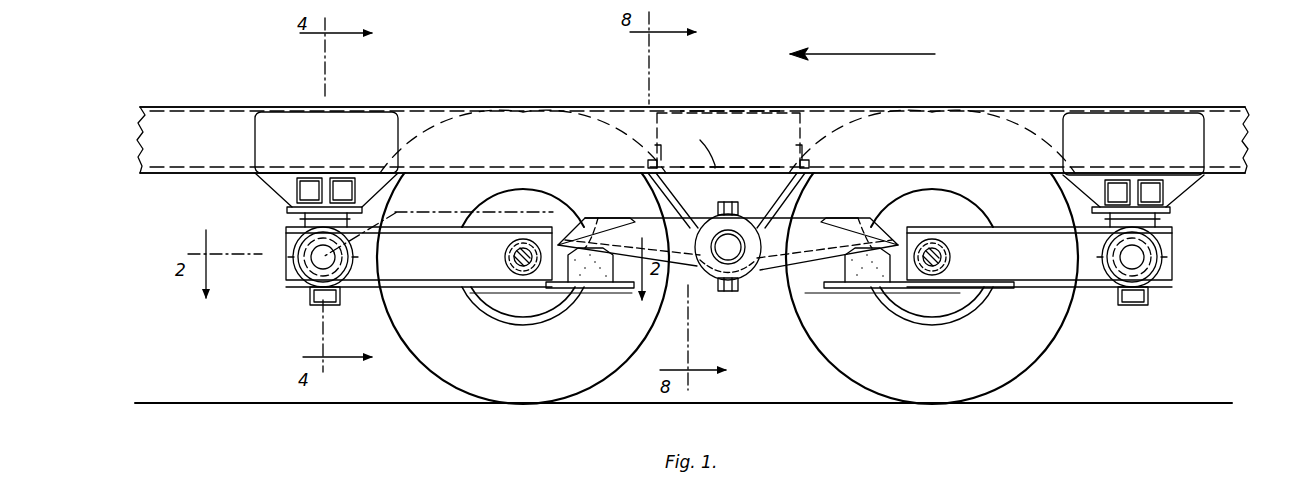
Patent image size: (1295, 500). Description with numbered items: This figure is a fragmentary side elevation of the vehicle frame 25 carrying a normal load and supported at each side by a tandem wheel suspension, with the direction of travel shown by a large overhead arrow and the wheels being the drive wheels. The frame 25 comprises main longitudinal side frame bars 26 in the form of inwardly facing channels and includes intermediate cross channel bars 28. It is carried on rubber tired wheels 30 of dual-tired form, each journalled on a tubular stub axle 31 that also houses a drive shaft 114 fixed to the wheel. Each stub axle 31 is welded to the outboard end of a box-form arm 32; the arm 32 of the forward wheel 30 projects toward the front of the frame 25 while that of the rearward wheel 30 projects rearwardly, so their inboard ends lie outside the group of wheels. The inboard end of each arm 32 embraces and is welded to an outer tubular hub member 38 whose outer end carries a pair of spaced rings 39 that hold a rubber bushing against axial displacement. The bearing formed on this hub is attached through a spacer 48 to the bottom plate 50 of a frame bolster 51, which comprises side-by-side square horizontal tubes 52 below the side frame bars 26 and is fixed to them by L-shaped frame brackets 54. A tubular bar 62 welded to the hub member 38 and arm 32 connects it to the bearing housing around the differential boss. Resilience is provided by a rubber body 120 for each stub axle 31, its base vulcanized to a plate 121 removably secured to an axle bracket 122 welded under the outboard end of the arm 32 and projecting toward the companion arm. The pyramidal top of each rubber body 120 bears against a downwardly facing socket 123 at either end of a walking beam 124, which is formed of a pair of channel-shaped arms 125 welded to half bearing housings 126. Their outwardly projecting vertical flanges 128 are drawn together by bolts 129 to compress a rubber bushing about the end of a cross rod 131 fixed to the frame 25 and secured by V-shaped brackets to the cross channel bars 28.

The vehicle frame 25 is at (1042, 103).
The main longitudinal side frame bars 26 is at (140, 124).
The intermediate cross channel bars 28 is at (728, 107).
The rubber tired wheels 30 is at (515, 380).
The tubular stub axle 31 is at (510, 257).
The arm 32 is at (404, 275).
The outer tubular hub member 38 is at (330, 268).
The spaced rings 39 is at (290, 288).
The spacer 48 is at (292, 218).
The bottom plate 50 is at (292, 207).
The frame bolster 51 is at (305, 178).
The horizontal tubes 52 is at (340, 178).
The L-shaped frame bracket 54 is at (390, 110).
The tubular bar 62 is at (328, 305).
The drive shafts 114 is at (527, 277).
The rubber body 120 is at (590, 283).
The plate 121 is at (582, 289).
The axle bracket 122 is at (520, 298).
The downwardly facing socket 123 is at (600, 218).
The walking beam 124 is at (808, 214).
The channel-shaped arms 125 is at (680, 212).
The half bearing housing 126 is at (727, 308).
The vertical flanges 128 is at (728, 202).
The bolts 129 is at (738, 208).
The cross rod 131 is at (778, 233).